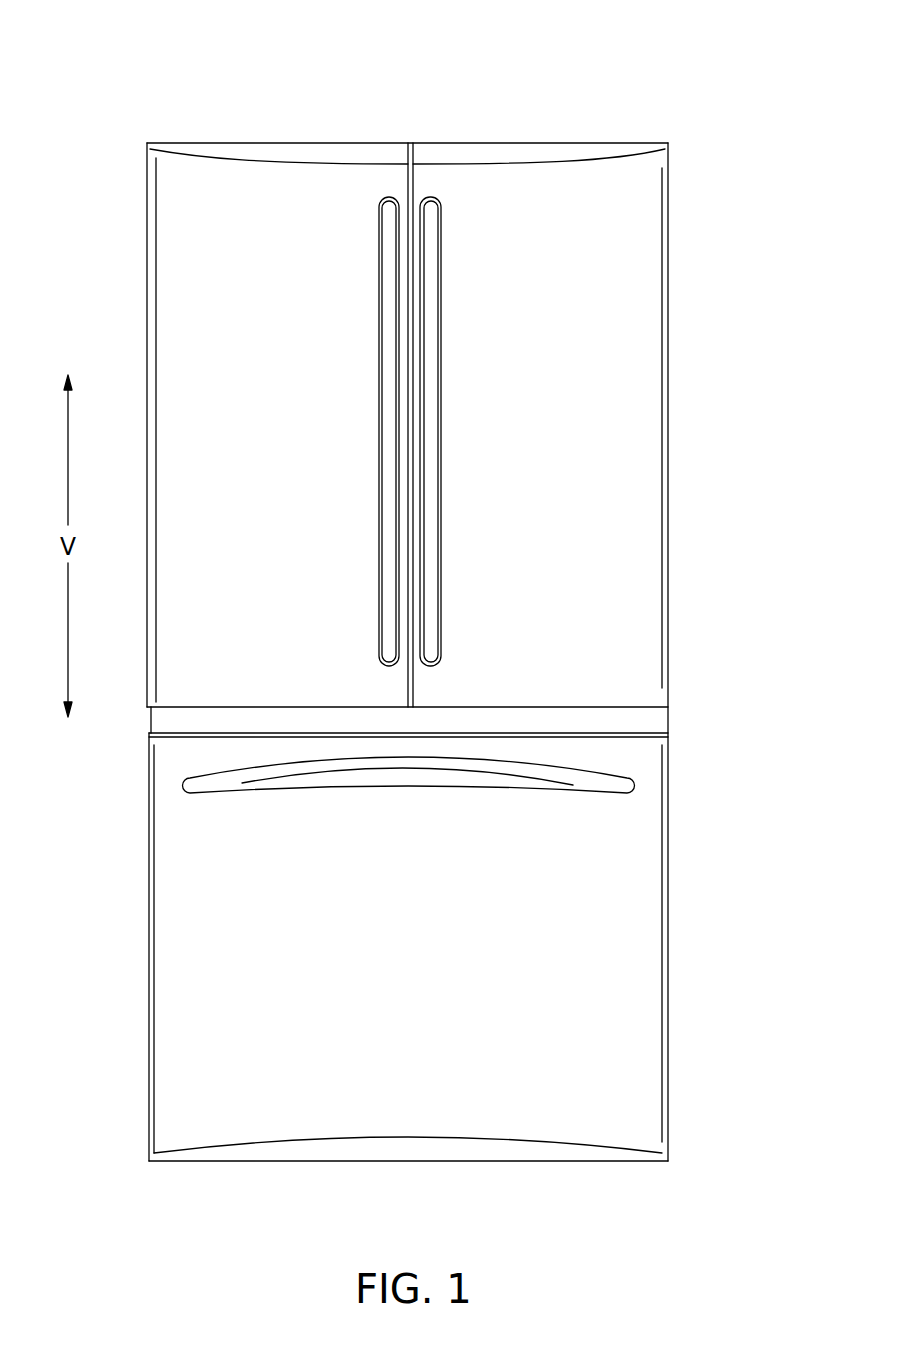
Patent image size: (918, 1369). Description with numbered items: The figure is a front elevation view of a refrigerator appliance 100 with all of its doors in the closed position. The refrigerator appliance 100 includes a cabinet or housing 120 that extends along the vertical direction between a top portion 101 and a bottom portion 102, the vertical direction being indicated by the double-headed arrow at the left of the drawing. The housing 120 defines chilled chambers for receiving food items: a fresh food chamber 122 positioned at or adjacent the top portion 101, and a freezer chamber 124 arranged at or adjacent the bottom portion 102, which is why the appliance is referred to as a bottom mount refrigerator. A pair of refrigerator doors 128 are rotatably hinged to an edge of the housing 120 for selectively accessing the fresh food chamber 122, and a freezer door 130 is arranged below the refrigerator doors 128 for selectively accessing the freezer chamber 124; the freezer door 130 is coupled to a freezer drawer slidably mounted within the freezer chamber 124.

The refrigerator appliance 100 is at (688, 103).
The top portion 101 is at (130, 142).
The bottom portion 102 is at (130, 1154).
The housing 120 is at (655, 723).
The fresh food chamber 122 is at (459, 388).
The freezer chamber 124 is at (605, 980).
The refrigerator doors 128 is at (288, 183).
The freezer door 130 is at (190, 963).